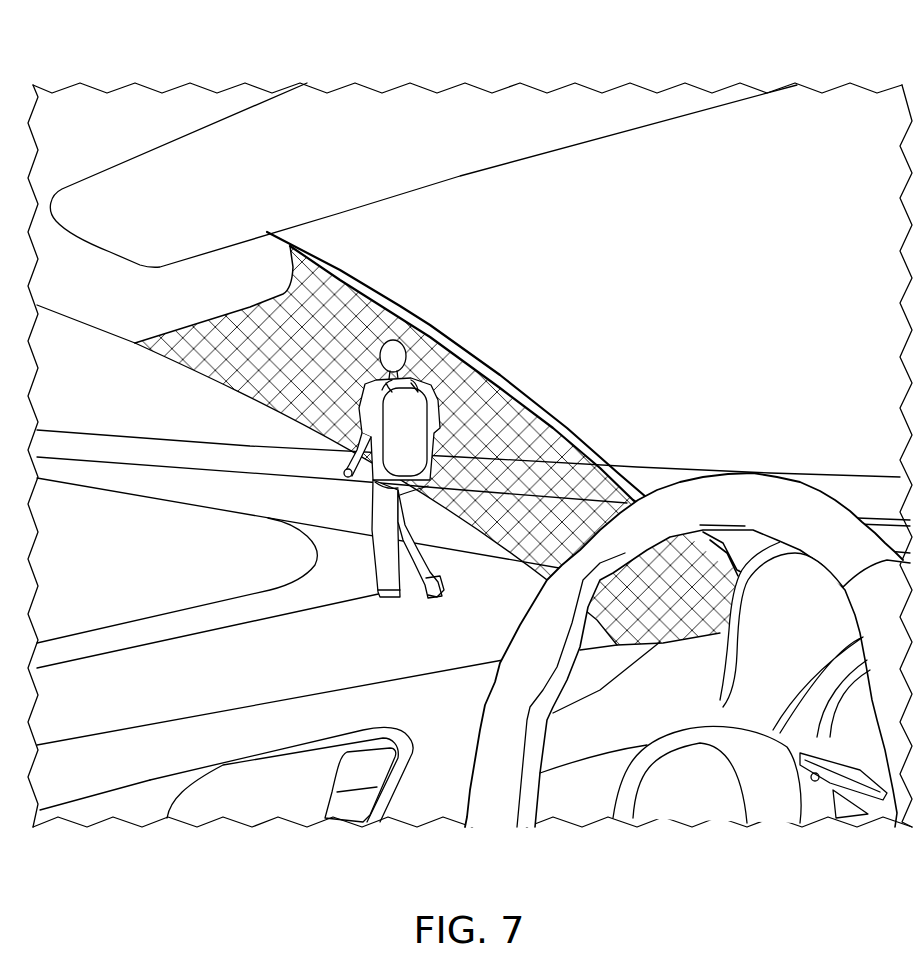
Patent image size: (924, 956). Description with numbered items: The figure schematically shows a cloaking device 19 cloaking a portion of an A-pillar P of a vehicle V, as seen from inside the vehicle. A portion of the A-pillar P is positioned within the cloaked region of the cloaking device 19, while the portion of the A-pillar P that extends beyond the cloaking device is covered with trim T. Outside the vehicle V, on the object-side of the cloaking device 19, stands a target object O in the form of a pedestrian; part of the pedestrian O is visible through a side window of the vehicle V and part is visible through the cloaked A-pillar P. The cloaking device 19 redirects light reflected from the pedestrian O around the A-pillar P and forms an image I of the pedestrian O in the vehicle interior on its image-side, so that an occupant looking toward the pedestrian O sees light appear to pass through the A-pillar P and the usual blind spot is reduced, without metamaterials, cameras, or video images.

The vehicle V is at (137, 108).
The A-pillar P is at (128, 313).
The trim T is at (284, 266).
The cloaking device 19 is at (496, 366).
The image I is at (540, 410).
The target object O is at (388, 580).